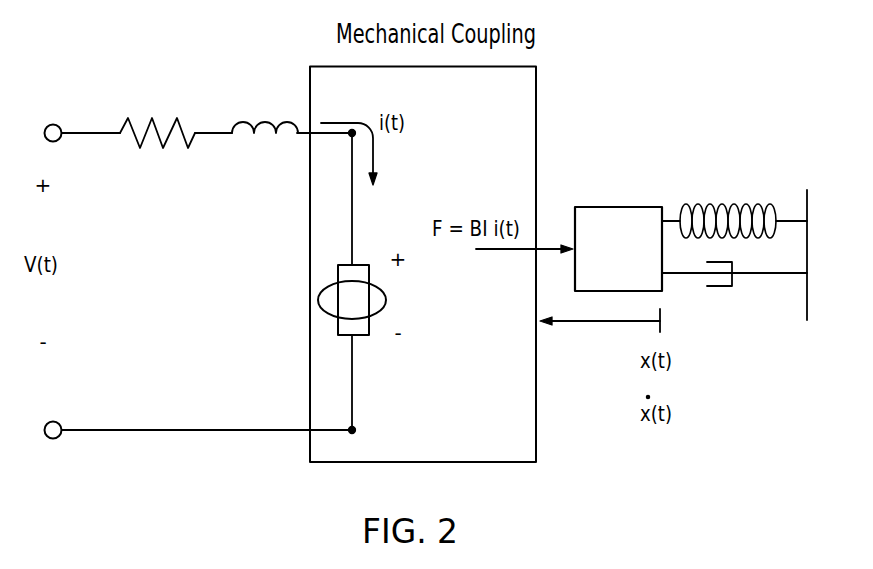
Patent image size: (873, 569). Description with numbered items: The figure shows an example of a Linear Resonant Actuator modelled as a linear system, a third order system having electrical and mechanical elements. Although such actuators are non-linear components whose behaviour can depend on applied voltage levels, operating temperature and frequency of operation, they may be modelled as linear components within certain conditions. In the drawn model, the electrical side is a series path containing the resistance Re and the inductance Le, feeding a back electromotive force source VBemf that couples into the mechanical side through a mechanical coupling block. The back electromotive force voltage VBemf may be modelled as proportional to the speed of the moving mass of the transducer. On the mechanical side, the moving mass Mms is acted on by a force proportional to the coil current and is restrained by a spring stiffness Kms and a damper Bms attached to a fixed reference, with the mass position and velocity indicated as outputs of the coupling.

The voice coil DC resistance Re is at (157, 119).
The voice coil inductance Le is at (265, 111).
The back-EMF voltage source VBemf is at (389, 300).
The moving mass Mms is at (618, 249).
The suspension stiffness (spring) Kms is at (734, 204).
The mechanical damping (damper) Bms is at (734, 293).